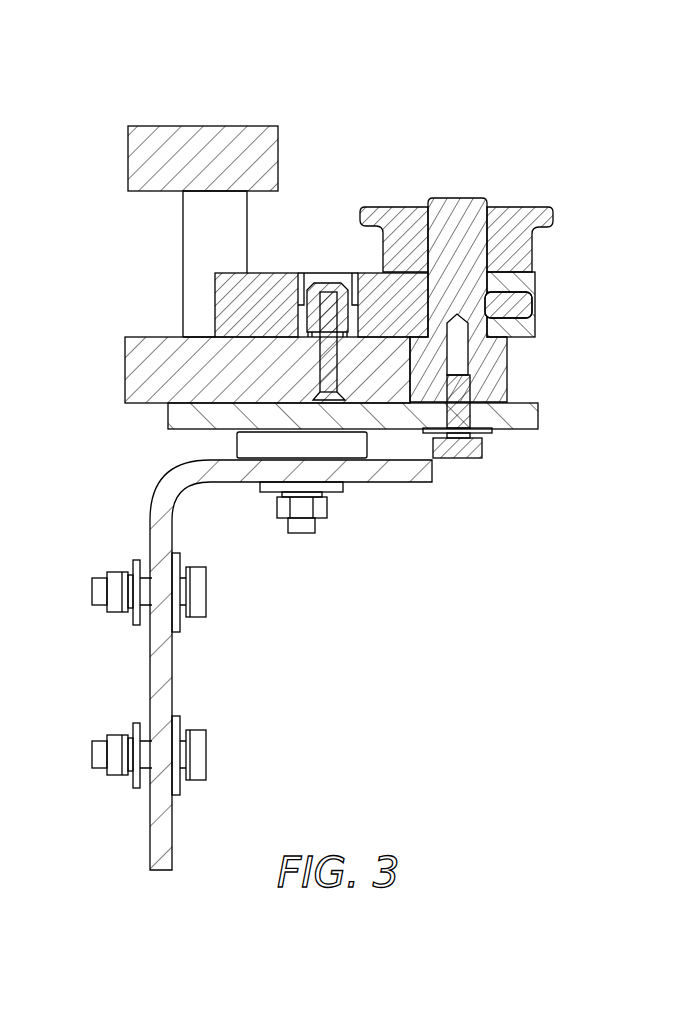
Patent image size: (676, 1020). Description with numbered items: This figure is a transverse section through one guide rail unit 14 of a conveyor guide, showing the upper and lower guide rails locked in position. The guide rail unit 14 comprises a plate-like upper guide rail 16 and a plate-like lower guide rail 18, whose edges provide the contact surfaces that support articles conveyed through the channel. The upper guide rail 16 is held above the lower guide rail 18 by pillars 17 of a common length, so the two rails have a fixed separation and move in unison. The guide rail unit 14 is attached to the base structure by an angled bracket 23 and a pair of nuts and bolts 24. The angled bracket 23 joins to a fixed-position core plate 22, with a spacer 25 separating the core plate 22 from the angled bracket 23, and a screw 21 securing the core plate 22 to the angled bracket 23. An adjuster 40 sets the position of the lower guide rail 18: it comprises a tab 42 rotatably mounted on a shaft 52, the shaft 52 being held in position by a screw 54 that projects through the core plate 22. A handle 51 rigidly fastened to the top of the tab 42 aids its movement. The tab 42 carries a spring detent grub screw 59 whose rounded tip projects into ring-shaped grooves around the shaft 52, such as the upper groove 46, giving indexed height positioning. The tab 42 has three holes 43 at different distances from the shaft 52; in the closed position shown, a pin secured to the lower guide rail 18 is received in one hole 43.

The guide rail unit 14 is at (296, 473).
The upper guide rail 16 is at (207, 125).
The pillar 17 is at (182, 266).
The lower guide rail 18 is at (125, 369).
The screw 21 is at (302, 533).
The core plate 22 is at (168, 422).
The angled bracket 23 is at (152, 855).
The nuts and bolts 24 is at (207, 592).
The spacer 25 is at (237, 443).
The adjuster 40 is at (487, 299).
The tab 42 is at (281, 273).
The hole 43 is at (324, 283).
The upper ring-shaped groove 46 is at (488, 230).
The handle 51 is at (554, 215).
The shaft 52 is at (456, 198).
The screw 54 is at (458, 458).
The spring detent grub screw 59 is at (537, 303).